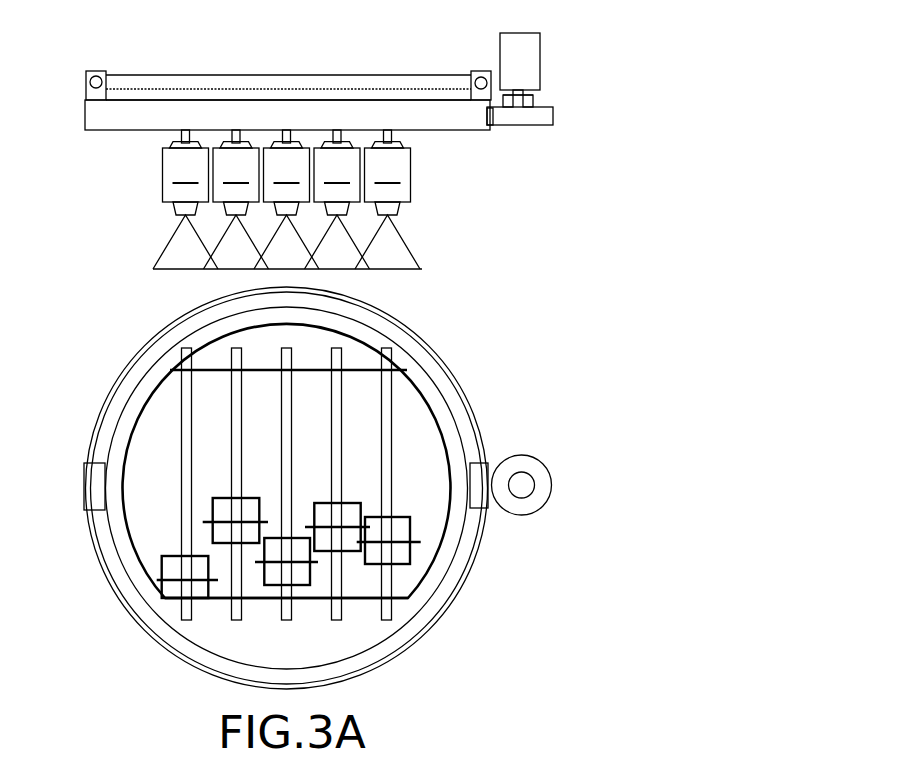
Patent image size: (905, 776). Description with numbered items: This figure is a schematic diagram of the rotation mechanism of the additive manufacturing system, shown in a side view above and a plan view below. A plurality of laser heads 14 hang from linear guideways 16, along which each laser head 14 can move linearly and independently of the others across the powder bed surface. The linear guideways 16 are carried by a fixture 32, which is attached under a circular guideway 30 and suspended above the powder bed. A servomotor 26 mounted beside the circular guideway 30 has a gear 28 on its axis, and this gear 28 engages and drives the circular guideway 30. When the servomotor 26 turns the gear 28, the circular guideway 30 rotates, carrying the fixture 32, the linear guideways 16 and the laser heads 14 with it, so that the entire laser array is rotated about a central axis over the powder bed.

The laser head 14 is at (402, 552).
The linear guideway 16 is at (392, 134).
The servomotor 26 is at (525, 58).
The gear 28 is at (522, 125).
The circular guideway 30 is at (447, 74).
The fixture 32 is at (93, 131).